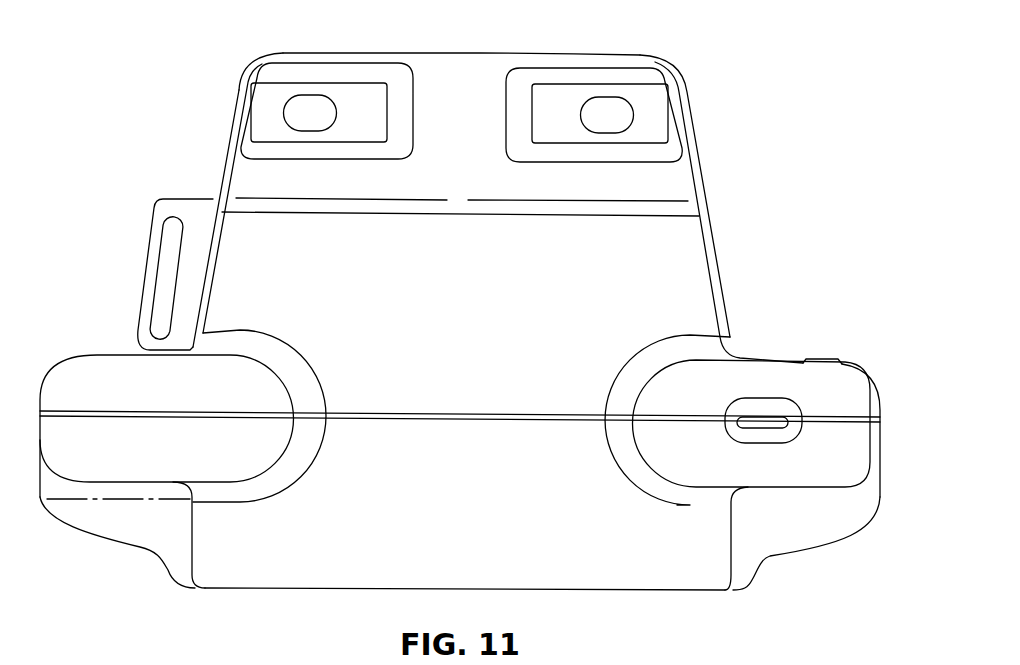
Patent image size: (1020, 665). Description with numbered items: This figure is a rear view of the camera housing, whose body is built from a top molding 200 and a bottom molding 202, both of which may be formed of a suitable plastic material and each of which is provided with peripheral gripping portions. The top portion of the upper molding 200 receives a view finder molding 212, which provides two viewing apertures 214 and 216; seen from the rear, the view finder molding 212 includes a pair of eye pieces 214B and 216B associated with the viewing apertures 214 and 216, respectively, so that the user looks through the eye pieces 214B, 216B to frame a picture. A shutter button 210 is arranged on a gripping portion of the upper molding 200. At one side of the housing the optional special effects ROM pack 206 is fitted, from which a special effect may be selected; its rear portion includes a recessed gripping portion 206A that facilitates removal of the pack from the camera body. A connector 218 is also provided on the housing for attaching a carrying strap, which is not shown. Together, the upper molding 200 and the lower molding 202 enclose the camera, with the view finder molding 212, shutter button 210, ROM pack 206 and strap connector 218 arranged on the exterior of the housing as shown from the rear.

The top molding 200 is at (693, 268).
The bottom molding 202 is at (262, 578).
The special effects ROM pack 206 is at (203, 208).
The recessed gripping portion 206A is at (173, 253).
The shutter button 210 is at (830, 363).
The view finder molding 212 is at (480, 72).
The viewing aperture 214 is at (295, 108).
The eye piece 214B is at (285, 76).
The viewing aperture 216 is at (617, 113).
The eye piece 216B is at (647, 82).
The connector 218 is at (790, 415).